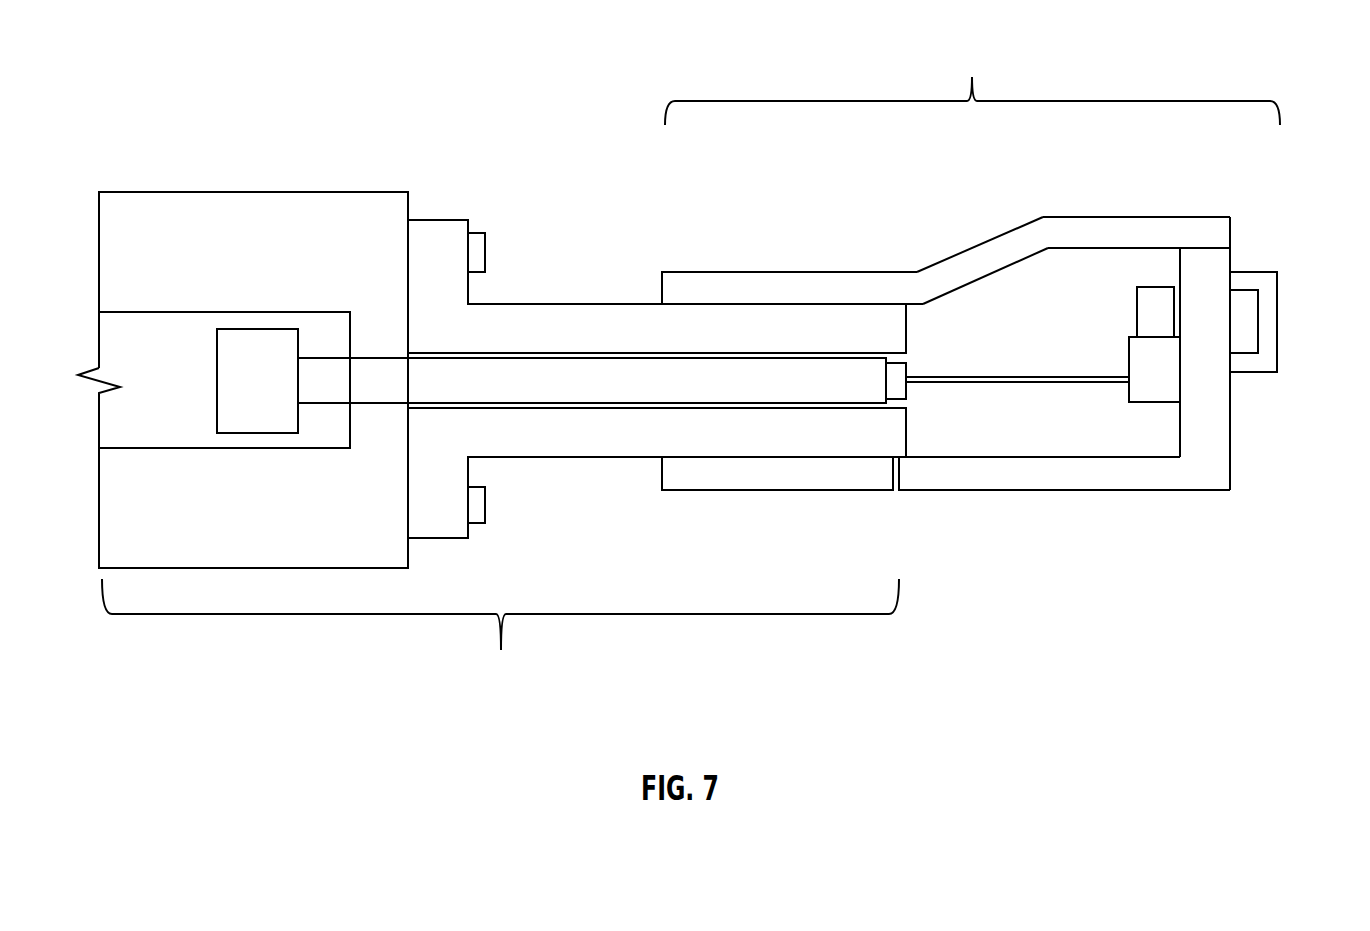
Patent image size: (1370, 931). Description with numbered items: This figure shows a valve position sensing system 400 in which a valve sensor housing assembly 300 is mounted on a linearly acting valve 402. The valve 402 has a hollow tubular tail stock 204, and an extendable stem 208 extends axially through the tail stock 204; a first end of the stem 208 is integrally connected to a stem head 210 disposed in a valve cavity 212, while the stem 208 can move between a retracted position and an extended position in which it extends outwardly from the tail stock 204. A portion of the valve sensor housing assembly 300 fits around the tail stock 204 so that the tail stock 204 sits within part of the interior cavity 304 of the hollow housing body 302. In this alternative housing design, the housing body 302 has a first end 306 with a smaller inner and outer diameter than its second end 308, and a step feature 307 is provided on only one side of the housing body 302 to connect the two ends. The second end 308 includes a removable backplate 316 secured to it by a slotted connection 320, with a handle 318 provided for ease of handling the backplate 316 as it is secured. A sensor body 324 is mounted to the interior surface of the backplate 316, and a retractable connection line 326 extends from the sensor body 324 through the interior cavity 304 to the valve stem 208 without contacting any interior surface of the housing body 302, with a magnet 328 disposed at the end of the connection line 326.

The tail stock 204 is at (543, 448).
The extendable stem 208 is at (580, 387).
The stem head 210 is at (258, 425).
The valve cavity 212 is at (152, 437).
The valve sensor housing assembly 300 is at (967, 57).
The housing body 302 is at (1088, 216).
The interior cavity 304 is at (1048, 272).
The first end 306 is at (733, 522).
The step feature 307 is at (968, 247).
The second end 308 is at (1232, 177).
The removable backplate 316 is at (1233, 256).
The handle 318 is at (1280, 297).
The slotted connection 320 is at (1223, 393).
The sensor body 324 is at (1162, 387).
The retractable connection line 326 is at (1043, 380).
The magnet 328 is at (908, 391).
The valve position sensing system 400 is at (498, 664).
The linearly acting valve 402 is at (177, 175).